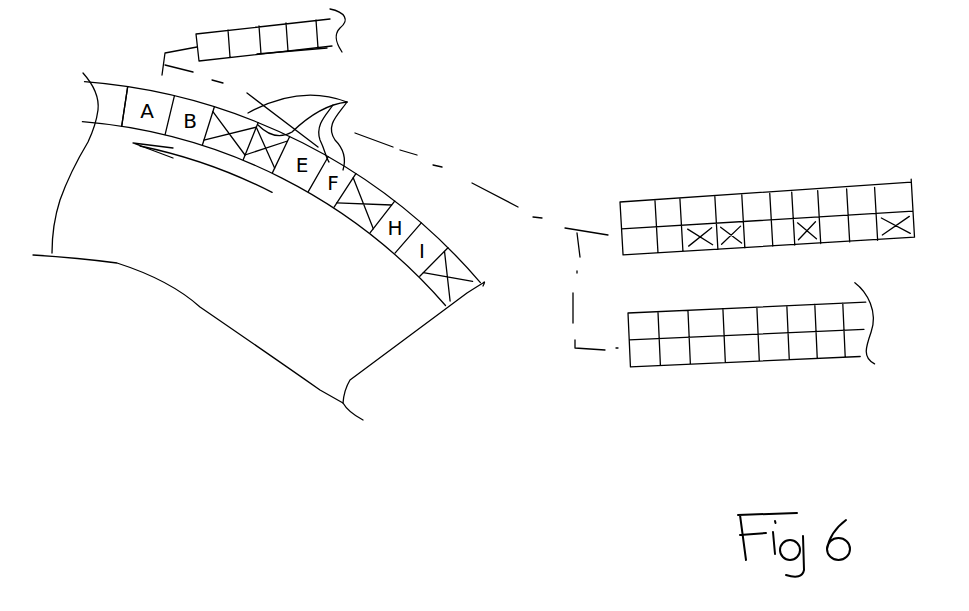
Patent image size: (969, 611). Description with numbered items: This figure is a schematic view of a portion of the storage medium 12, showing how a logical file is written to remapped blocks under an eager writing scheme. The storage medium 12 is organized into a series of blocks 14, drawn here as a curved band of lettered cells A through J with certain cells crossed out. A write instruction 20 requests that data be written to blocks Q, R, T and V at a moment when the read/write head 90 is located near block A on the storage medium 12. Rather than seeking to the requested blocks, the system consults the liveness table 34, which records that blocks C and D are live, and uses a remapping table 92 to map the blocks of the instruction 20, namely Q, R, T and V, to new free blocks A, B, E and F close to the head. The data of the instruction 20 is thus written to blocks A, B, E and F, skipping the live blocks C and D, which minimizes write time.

The storage medium 12 is at (272, 308).
The blocks 14 is at (318, 132).
The write instruction 20 is at (377, 26).
The liveness table 34 is at (748, 194).
The read/write head 90 is at (148, 82).
The remapping table 92 is at (703, 305).